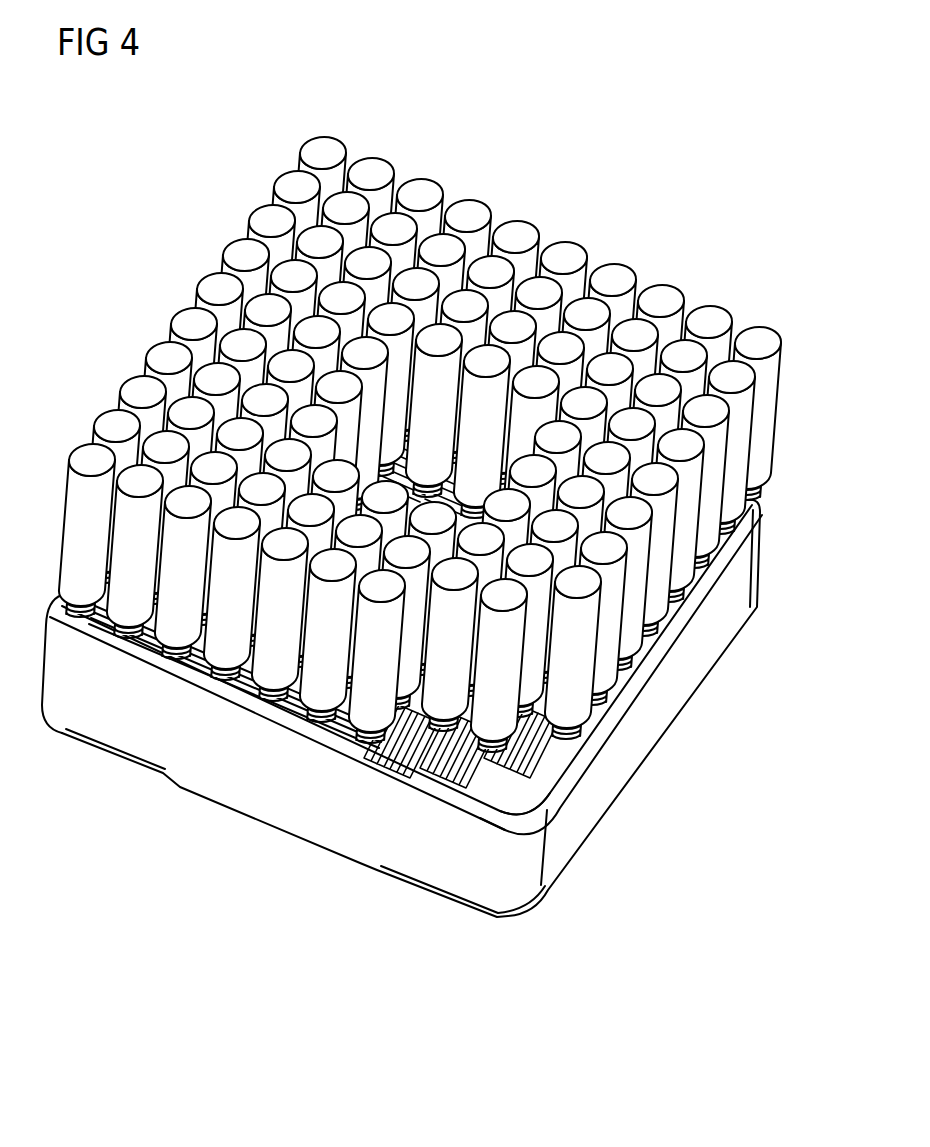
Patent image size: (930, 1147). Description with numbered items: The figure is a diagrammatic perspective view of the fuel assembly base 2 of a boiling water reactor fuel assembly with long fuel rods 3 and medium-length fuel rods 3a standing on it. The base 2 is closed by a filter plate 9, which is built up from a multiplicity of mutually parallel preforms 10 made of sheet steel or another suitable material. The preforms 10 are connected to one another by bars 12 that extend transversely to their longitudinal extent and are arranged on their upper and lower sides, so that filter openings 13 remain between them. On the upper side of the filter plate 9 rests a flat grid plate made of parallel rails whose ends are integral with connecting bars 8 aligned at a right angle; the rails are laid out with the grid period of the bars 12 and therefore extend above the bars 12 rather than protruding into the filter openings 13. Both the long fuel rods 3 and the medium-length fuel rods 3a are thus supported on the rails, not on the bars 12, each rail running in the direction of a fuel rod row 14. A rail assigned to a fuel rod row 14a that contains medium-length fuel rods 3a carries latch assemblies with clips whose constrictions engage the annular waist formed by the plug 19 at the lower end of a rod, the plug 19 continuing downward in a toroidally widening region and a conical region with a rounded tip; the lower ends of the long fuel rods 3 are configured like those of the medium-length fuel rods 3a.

The fuel assembly base 2 is at (590, 826).
The fuel rods 3 is at (78, 518).
The medium-length fuel rods 3a is at (348, 206).
The connecting bars 8 is at (102, 635).
The filter plate 9 is at (76, 628).
The preforms 10 is at (499, 798).
The bars 12 is at (275, 665).
The filter openings 13 is at (547, 793).
The fuel rod row 14 is at (332, 136).
The fuel rod row containing medium-length fuel rods 14a is at (389, 164).
The plug 19 is at (565, 718).